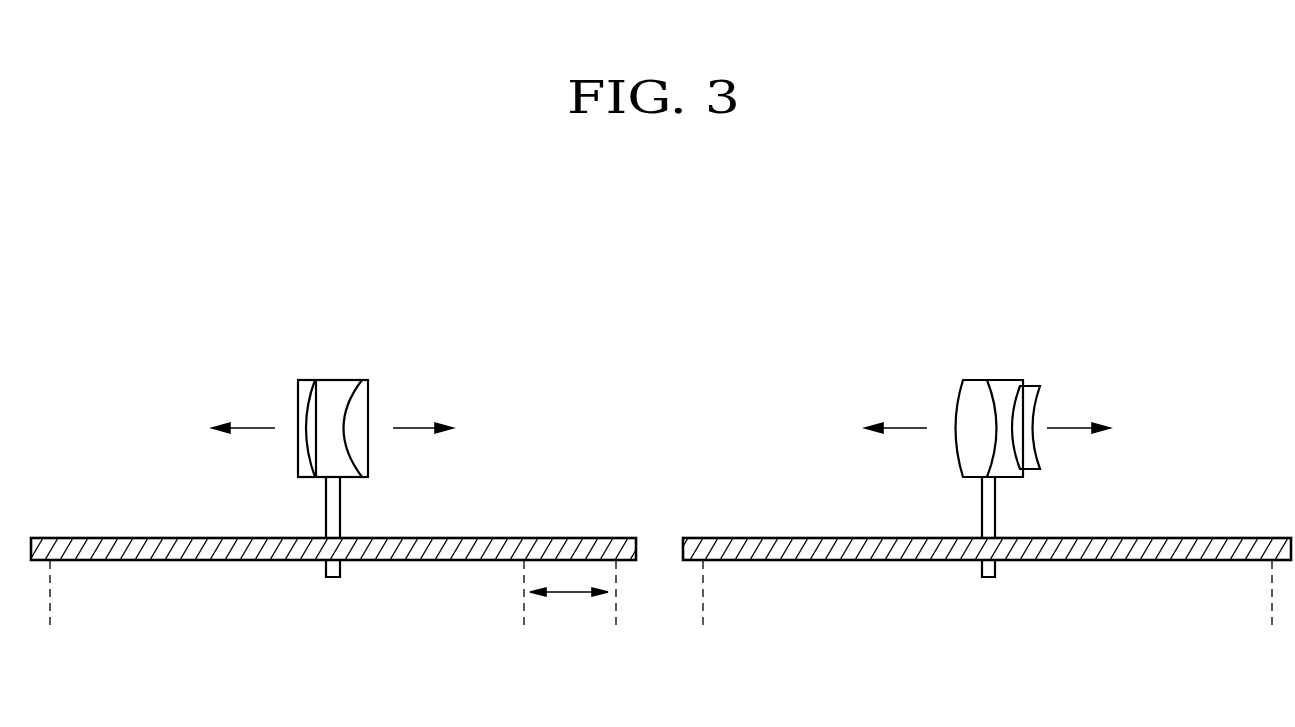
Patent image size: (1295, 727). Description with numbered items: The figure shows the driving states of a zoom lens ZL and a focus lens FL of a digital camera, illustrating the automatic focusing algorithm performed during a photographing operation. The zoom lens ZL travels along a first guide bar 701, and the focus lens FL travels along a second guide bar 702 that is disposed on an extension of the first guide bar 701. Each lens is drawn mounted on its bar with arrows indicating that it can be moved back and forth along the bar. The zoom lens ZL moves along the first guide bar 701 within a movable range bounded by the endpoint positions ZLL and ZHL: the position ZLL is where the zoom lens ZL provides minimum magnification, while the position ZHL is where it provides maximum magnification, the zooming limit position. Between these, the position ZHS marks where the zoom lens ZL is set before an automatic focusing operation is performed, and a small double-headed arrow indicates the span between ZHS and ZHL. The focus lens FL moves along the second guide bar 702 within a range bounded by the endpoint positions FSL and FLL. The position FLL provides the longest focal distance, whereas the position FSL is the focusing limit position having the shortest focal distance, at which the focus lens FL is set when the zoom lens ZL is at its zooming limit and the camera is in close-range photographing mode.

The first guide bar 701 is at (95, 538).
The second guide bar 702 is at (1240, 538).
The zoom lens ZL is at (333, 379).
The focus lens FL is at (996, 379).
The minimum magnification position ZLL is at (46, 611).
The preset zoom lens position ZHS is at (525, 612).
The maximum magnification position ZHL is at (617, 612).
The focusing limit position FSL is at (702, 612).
The longest focal distance position FLL is at (1270, 611).